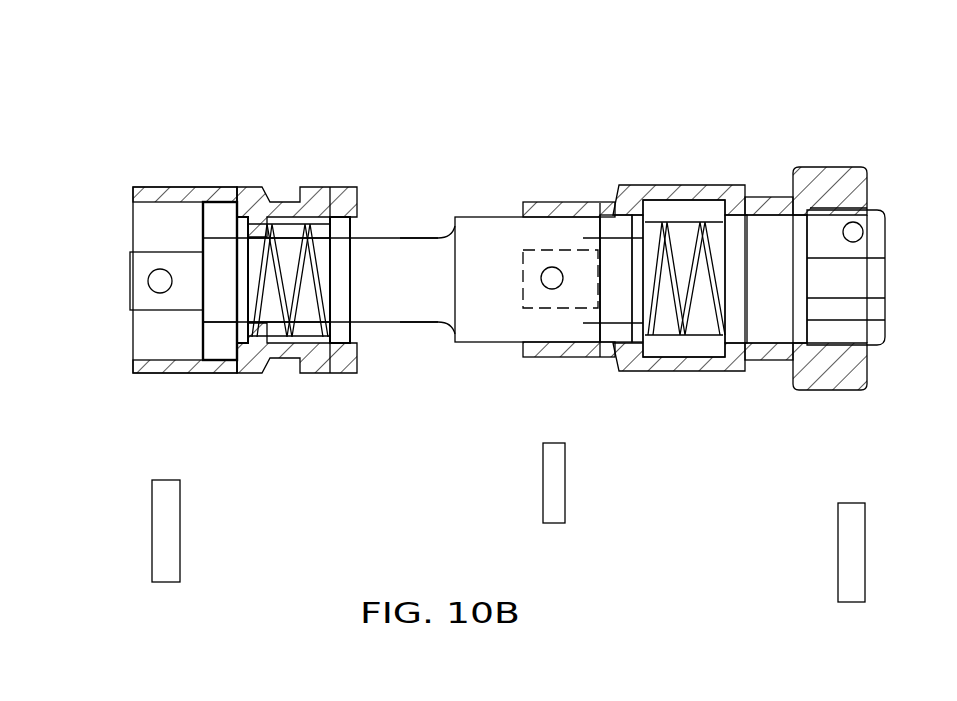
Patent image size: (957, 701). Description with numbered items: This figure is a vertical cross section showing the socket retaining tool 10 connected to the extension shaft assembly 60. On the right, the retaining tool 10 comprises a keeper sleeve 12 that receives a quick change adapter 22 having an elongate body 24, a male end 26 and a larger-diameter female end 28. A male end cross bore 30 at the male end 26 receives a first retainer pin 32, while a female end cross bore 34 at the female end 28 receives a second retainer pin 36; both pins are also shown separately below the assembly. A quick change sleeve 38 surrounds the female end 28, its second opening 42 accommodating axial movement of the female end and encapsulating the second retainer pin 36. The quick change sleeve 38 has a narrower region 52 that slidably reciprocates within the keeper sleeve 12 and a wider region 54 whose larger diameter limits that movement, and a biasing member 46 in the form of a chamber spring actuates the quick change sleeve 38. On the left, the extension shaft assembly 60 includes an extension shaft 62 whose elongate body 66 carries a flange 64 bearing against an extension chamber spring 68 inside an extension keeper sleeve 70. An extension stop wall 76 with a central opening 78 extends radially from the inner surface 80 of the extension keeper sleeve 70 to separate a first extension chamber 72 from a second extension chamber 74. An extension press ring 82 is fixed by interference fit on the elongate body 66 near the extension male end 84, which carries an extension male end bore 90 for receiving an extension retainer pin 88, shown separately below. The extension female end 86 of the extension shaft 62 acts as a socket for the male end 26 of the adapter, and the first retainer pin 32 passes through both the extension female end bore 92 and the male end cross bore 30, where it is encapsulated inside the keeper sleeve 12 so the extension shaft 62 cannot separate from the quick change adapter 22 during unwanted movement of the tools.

The socket retaining tool 10 is at (769, 110).
The keeper sleeve 12 is at (631, 185).
The quick change adapter 22 is at (767, 207).
The elongate body 24 is at (680, 227).
The male end 26 is at (523, 283).
The female end 28 is at (883, 350).
The male end cross bore 30 is at (563, 283).
The first retainer pin 32 is at (617, 330).
The female end cross bore 34 is at (863, 228).
The second retainer pin 36 is at (866, 548).
The quick change sleeve 38 is at (830, 167).
The second opening 42 is at (870, 207).
The biasing member 46 is at (680, 335).
The narrower region 52 is at (772, 348).
The wider region 54 is at (840, 390).
The extension shaft assembly 60 is at (257, 110).
The extension shaft 62 is at (498, 217).
The flange 64 is at (453, 332).
The elongate body 66 is at (410, 238).
The extension chamber spring 68 is at (307, 250).
The extension keeper sleeve 70 is at (245, 183).
The first extension chamber 72 is at (158, 218).
The second extension chamber 74 is at (305, 345).
The extension stop wall 76 is at (237, 223).
The central opening 78 is at (242, 282).
The inner surface 80 is at (287, 225).
The extension press ring 82 is at (220, 347).
The extension male end 84 is at (130, 273).
The extension female end 86 is at (580, 217).
The extension retainer pin 88 is at (182, 538).
The extension male end bore 90 is at (160, 283).
The extension female end bore 92 is at (548, 290).